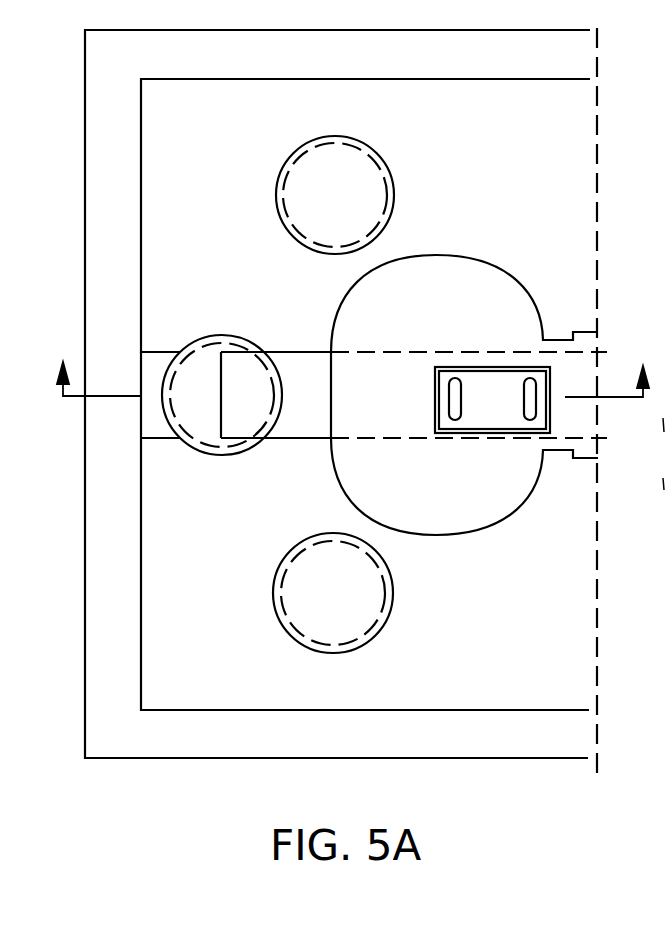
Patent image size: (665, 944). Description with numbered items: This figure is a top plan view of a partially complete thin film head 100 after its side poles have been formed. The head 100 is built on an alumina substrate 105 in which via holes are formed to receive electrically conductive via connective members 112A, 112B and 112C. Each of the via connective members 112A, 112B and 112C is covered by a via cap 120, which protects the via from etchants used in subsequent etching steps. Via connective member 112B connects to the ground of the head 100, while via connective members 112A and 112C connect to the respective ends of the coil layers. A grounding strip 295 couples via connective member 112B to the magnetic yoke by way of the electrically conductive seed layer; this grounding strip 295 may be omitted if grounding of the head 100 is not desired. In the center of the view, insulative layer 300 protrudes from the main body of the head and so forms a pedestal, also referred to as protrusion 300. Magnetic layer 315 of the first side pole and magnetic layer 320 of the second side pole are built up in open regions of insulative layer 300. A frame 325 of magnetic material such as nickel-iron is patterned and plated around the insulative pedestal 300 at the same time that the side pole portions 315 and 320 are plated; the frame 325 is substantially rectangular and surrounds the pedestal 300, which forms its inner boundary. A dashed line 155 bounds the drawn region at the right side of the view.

The thin film head 100 is at (358, 416).
The alumina substrate 105 is at (175, 685).
The via connective member 112A is at (318, 146).
The via connective member 112B is at (186, 440).
The via connective member 112C is at (280, 615).
The via cap 120 is at (337, 136).
The break line of plate 155 is at (597, 605).
The grounding strip 295 is at (303, 367).
The insulative layer 300 is at (491, 375).
The magnetic layer 315 is at (455, 378).
The magnetic layer 320 is at (531, 378).
The frame 325 is at (492, 367).